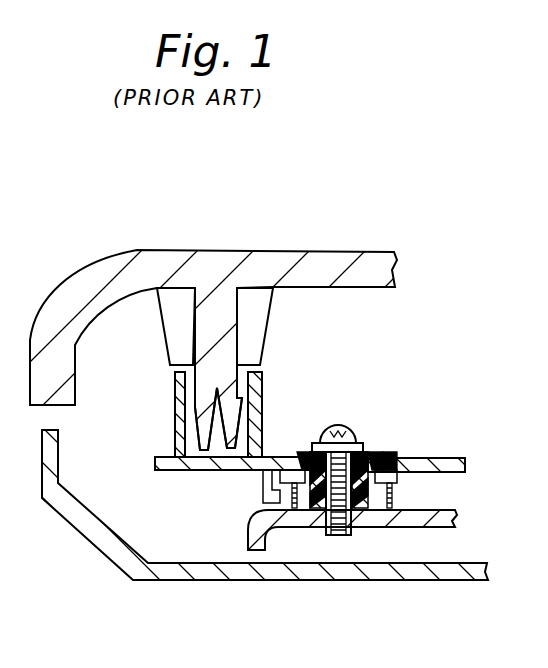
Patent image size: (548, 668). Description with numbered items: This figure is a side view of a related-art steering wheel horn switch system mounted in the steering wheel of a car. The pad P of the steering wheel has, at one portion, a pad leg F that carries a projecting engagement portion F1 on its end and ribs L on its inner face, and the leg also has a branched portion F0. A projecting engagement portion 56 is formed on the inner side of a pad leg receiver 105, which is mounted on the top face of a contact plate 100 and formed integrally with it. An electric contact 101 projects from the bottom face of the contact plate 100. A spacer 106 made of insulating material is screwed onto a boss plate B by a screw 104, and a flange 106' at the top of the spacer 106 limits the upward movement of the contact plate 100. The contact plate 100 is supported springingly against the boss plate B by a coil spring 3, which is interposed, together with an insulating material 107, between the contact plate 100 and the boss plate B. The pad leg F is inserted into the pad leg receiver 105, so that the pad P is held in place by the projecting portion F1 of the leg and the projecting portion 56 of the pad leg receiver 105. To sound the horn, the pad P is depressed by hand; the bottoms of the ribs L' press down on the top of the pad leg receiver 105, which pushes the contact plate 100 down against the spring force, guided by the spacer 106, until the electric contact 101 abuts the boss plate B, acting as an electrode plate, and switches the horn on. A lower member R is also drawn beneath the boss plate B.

The instrument panel P is at (306, 255).
The leg L is at (233, 326).
The leg L' is at (275, 332).
The fastening portion F is at (208, 350).
The engaging claws F1 is at (187, 435).
The mounting plate F0 is at (210, 470).
The post 105 is at (176, 426).
The post 56 is at (244, 398).
The mounting plate 100 is at (448, 462).
The insulating bushing 106 is at (342, 536).
The insulating bushing 106' is at (390, 450).
The fastening screw 107 is at (397, 478).
The bolt 104 is at (332, 536).
The hook 101 is at (264, 478).
The bracket 3 is at (403, 512).
The bracket B is at (448, 525).
The reinforcement member R is at (427, 578).